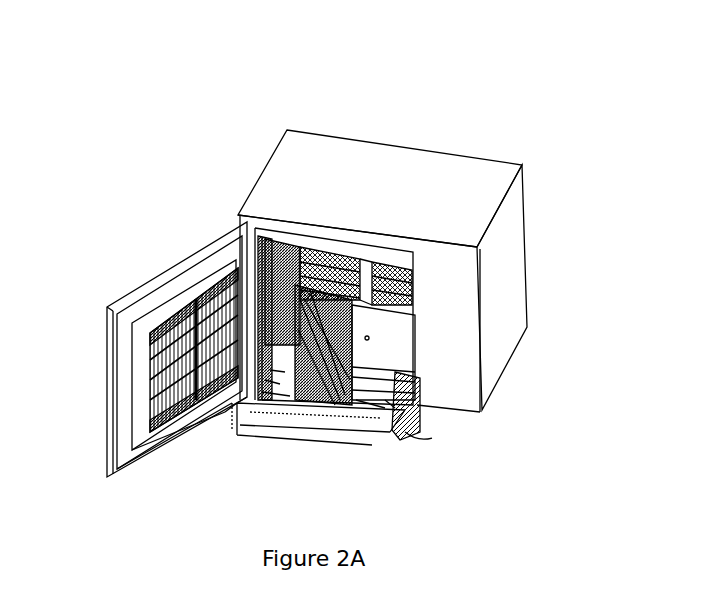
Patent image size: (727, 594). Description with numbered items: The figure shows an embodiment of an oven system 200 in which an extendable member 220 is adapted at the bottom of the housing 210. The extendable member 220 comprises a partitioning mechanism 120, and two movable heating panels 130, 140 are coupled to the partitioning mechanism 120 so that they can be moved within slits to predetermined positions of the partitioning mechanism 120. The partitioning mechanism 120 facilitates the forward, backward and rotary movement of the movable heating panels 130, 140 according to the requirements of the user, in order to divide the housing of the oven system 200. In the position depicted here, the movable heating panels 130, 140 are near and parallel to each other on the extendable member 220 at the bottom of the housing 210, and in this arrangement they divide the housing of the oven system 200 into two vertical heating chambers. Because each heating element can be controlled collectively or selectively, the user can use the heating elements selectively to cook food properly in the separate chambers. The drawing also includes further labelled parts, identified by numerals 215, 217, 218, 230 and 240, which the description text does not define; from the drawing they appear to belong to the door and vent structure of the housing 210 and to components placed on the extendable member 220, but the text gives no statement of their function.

The oven system 200 is at (140, 133).
The housing 210 is at (492, 173).
The door 215 is at (125, 293).
The air inlet vent 217 is at (400, 288).
The door vent 218 is at (167, 363).
The extendable member 220 is at (325, 433).
The component 230 is at (360, 412).
The component 240 is at (277, 400).
The movable heating panel 130 is at (300, 407).
The movable heating panel 140 is at (322, 408).
The partitioning mechanism 120 is at (408, 412).